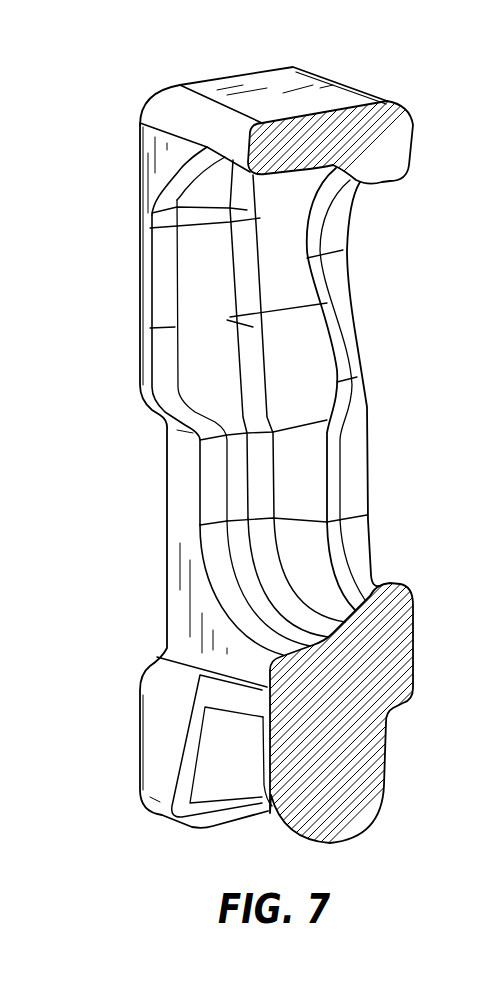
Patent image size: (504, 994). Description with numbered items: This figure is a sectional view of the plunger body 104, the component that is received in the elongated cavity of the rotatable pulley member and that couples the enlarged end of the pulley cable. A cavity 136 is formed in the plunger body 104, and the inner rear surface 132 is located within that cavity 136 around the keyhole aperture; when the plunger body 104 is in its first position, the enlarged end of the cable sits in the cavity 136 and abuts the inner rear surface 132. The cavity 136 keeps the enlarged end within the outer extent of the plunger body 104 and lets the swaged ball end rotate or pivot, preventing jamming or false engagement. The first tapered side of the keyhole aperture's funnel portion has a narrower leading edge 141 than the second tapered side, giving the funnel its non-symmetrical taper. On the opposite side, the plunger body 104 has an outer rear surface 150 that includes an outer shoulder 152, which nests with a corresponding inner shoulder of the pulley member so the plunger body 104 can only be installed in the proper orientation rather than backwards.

The plunger body 104 is at (420, 70).
The inner rear surface 132 is at (300, 338).
The cavity 136 is at (223, 268).
The leading edge 141 is at (353, 372).
The outer rear surface 150 is at (178, 604).
The outer shoulder 152 is at (151, 419).